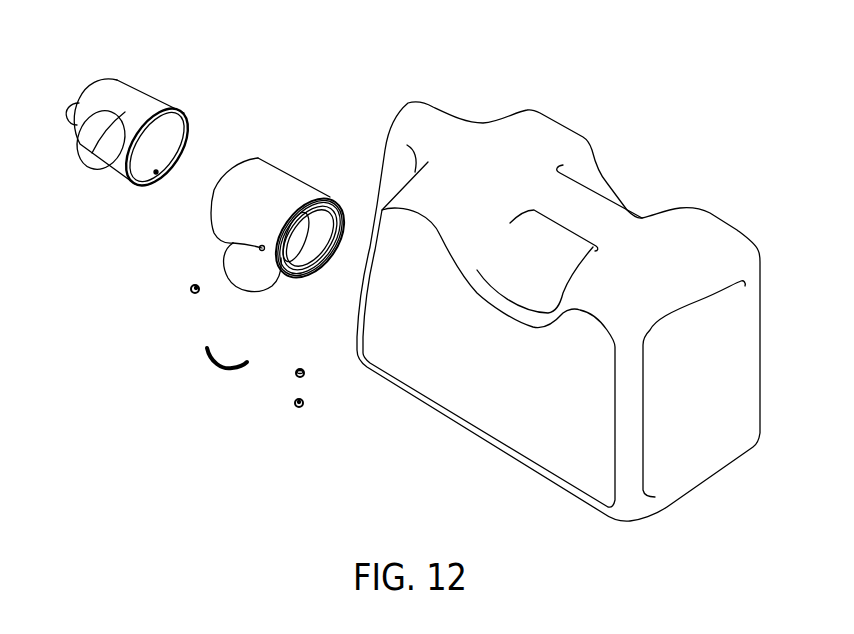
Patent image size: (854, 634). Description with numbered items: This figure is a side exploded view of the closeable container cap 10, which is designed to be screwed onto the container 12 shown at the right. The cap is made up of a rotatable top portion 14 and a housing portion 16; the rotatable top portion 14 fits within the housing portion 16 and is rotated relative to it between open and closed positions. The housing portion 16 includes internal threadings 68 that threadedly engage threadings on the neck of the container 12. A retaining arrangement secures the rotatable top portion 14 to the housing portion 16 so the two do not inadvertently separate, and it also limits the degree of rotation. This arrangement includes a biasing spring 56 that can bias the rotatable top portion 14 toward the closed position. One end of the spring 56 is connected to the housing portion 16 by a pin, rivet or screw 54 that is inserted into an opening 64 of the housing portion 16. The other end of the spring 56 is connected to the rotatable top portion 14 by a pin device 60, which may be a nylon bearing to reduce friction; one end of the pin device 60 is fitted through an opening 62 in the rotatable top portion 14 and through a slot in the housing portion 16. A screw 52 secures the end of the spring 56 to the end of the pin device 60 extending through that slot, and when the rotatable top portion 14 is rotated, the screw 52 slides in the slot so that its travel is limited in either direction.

The closeable container cap 10 is at (64, 44).
The container 12 is at (432, 104).
The rotatable top portion 14 is at (167, 107).
The housing portion 16 is at (285, 123).
The screw 52 is at (295, 376).
The screw 54 is at (188, 291).
The spring 56 is at (203, 361).
The pin device 60 is at (306, 403).
The opening 62 is at (160, 170).
The opening 64 is at (258, 249).
The internal threadings 68 is at (304, 273).